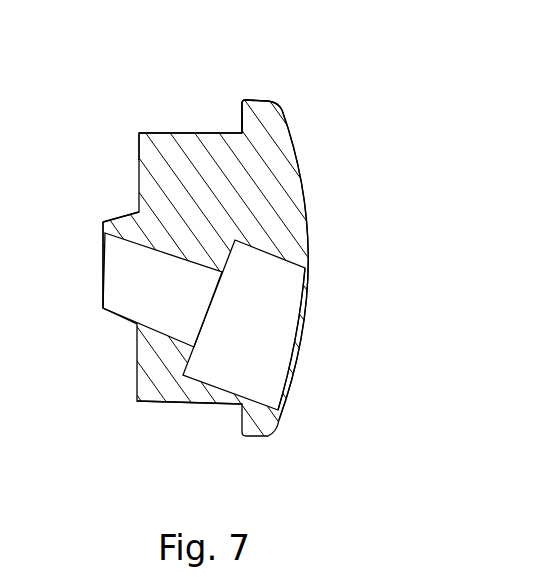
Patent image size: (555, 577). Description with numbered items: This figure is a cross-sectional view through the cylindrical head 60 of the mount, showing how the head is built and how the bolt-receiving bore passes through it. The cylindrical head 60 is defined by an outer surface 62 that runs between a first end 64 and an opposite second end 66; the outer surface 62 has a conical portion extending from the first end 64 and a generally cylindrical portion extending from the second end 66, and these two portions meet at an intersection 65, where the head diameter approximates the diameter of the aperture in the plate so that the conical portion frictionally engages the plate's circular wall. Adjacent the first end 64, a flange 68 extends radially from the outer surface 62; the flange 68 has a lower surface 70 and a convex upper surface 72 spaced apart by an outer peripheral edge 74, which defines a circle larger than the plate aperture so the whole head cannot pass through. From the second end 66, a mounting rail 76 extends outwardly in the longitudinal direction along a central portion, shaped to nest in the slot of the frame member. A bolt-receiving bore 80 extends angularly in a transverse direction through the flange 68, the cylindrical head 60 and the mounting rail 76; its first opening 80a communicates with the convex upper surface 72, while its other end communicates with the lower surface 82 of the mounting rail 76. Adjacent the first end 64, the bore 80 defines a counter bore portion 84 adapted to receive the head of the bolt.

The cylindrical head 60 is at (212, 421).
The outer surface 62 is at (159, 411).
The first end 64 is at (240, 128).
The intersection 65 is at (178, 133).
The second end 66 is at (137, 133).
The flange 68 is at (289, 102).
The lower surface 70 is at (240, 126).
The convex upper surface 72 is at (297, 157).
The outer peripheral edge 74 is at (259, 99).
The mounting rail 76 is at (101, 215).
The bolt-receiving bore 80 is at (179, 303).
The first opening 80a is at (100, 271).
The lower surface 82 is at (102, 232).
The counter bore portion 84 is at (265, 337).